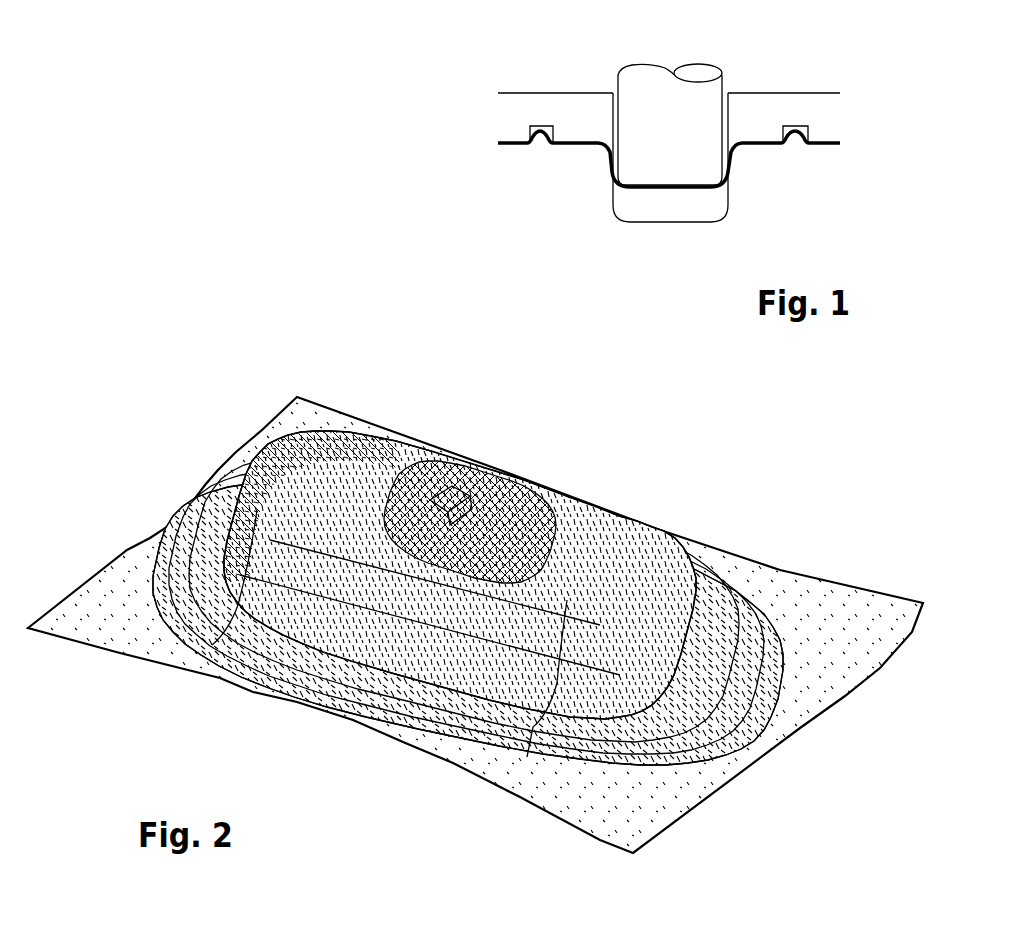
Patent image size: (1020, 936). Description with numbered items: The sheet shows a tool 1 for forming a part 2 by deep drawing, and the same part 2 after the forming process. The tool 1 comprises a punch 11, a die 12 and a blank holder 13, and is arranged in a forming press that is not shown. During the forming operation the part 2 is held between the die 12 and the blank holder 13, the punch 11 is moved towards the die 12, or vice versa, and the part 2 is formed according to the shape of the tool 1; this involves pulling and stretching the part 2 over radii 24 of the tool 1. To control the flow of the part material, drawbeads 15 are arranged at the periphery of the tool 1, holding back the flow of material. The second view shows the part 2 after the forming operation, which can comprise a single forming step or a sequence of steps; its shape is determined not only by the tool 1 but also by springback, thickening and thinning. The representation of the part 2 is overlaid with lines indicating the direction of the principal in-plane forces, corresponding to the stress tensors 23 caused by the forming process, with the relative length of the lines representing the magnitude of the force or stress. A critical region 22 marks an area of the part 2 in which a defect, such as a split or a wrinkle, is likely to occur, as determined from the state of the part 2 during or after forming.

In FIG. 1, the tool 1 is at (694, 150).
In FIG. 1, the part 2 is at (840, 144).
In FIG. 2, the part 2 is at (652, 836).
In FIG. 1, the punch 11 is at (705, 76).
In FIG. 1, the die 12 is at (835, 190).
In FIG. 1, the blank holder 13 is at (832, 112).
In FIG. 1, the drawbeads 15 is at (798, 150).
In FIG. 2, the critical region 22 is at (540, 497).
In FIG. 2, the stress tensors 23 is at (392, 455).
In FIG. 1, the radii 24 is at (622, 176).